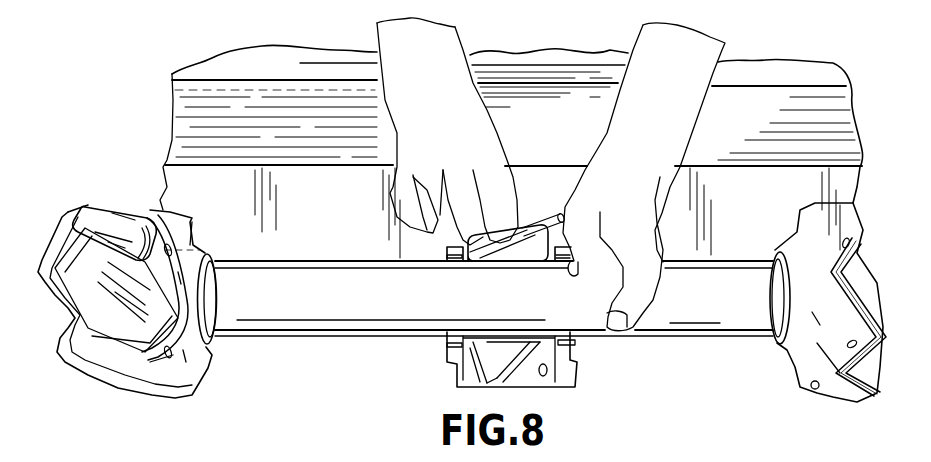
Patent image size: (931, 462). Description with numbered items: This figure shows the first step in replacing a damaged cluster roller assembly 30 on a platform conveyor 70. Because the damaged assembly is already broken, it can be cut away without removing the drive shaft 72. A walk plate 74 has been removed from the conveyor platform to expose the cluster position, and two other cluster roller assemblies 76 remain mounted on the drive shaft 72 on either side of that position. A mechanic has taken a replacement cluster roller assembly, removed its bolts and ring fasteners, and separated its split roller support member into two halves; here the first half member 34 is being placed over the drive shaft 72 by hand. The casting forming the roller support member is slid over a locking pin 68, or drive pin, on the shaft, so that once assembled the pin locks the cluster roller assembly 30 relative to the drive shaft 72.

The platform conveyor 70 is at (788, 58).
The walk plate 74 is at (252, 68).
The cluster roller assembly 30 is at (806, 192).
The cluster roller assemblies 76 is at (98, 165).
The drive shaft 72 is at (328, 311).
The locking pin 68 is at (570, 280).
The first half member 34 is at (436, 379).